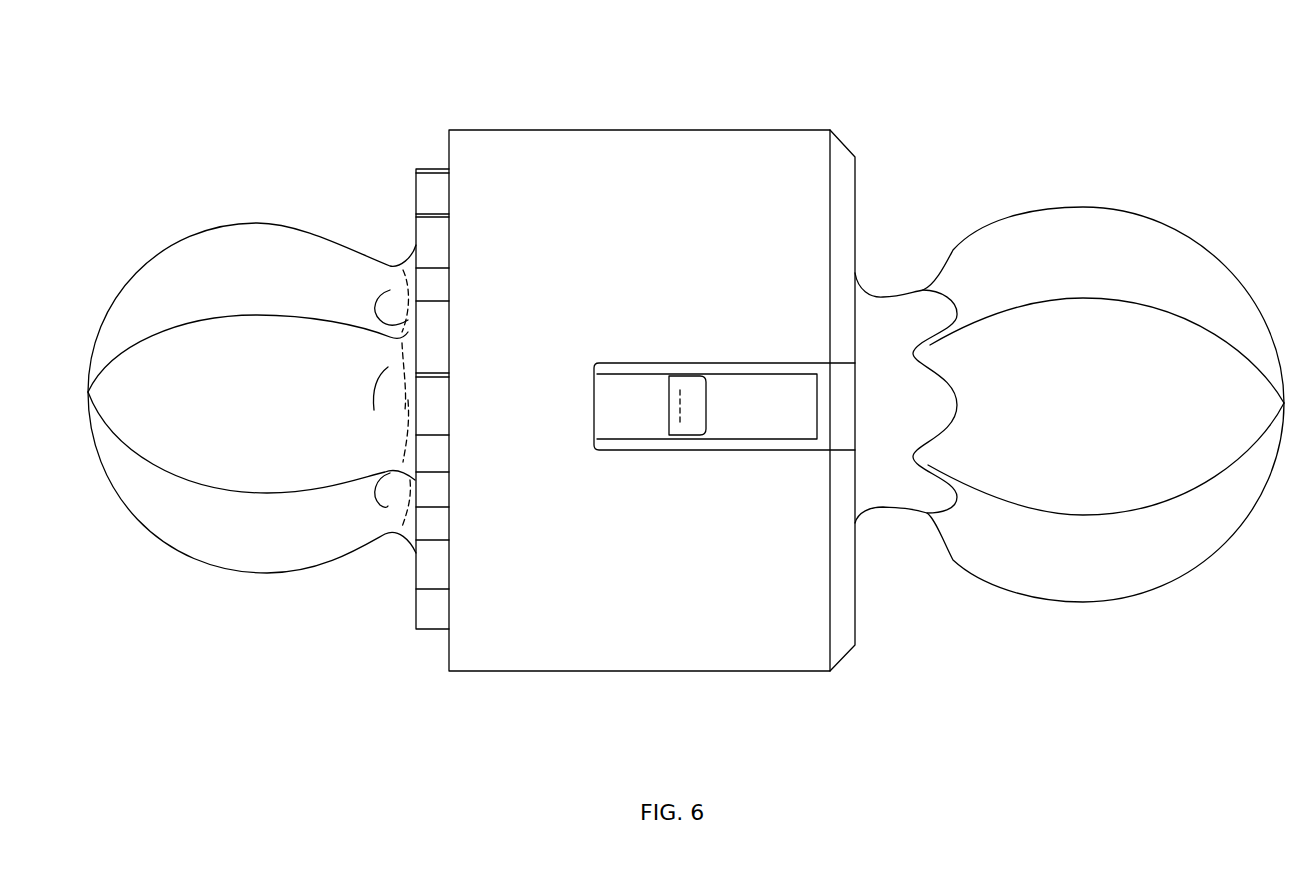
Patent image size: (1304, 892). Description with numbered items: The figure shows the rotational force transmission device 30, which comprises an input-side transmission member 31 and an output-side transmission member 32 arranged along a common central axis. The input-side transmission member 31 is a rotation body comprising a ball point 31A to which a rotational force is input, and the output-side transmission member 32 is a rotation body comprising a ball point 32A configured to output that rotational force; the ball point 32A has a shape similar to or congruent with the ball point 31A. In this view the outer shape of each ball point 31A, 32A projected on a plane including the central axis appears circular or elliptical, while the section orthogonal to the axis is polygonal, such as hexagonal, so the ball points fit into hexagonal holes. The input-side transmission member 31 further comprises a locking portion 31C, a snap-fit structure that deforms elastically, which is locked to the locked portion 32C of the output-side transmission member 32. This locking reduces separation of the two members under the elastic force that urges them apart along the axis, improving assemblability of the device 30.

The rotational force transmission device 30 is at (905, 73).
The input-side transmission member 31 is at (415, 198).
The ball point 31A is at (254, 241).
The locking portion 31C is at (653, 408).
The output-side transmission member 32 is at (684, 130).
The ball point 32A is at (1107, 228).
The locked portion 32C is at (597, 408).